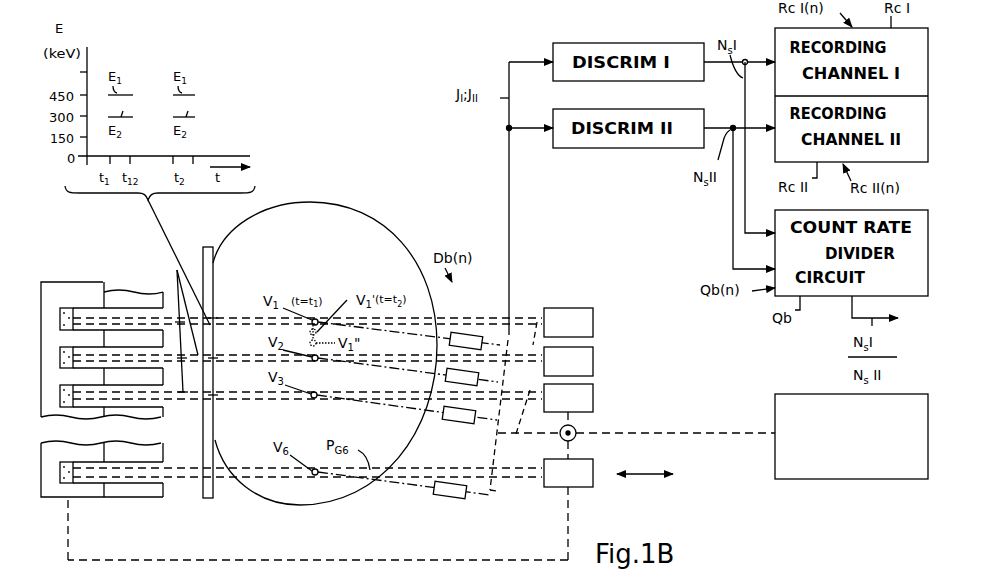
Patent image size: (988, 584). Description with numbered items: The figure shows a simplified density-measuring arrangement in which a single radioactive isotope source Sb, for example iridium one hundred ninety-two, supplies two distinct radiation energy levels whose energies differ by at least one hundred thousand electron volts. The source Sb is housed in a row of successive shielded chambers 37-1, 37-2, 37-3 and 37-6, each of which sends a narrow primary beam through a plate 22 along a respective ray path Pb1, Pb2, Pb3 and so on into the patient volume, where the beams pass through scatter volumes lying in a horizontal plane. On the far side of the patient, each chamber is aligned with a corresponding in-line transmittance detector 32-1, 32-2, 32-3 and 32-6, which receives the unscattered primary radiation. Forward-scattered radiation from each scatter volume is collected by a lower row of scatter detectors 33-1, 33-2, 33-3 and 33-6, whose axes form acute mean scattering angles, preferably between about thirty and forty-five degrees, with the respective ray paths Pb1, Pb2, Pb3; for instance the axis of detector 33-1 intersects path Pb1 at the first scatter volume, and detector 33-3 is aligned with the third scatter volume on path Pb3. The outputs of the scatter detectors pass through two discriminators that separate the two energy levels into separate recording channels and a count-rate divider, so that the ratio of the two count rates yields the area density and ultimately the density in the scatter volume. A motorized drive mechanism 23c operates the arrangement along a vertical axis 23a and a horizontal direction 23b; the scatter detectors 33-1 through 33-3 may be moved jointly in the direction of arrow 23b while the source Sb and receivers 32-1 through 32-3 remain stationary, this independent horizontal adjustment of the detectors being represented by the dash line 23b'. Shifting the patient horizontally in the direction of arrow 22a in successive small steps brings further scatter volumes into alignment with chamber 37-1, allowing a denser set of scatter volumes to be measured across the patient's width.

The shielded chamber 37-1 is at (68, 308).
The shielded chamber 37-2 is at (75, 367).
The shielded chamber 37-3 is at (85, 410).
The shielded chamber 37-6 is at (90, 485).
The radiation source Sb is at (92, 281).
The plate 22 is at (205, 492).
The arrow indicating horizontal shifting direction 22a is at (227, 490).
The scatter detector 33-1 is at (467, 335).
The scatter detector 33-2 is at (478, 382).
The scatter detector 33-3 is at (447, 421).
The scatter detector 33-6 is at (452, 495).
The transmittance detector 32-1 is at (593, 323).
The transmittance detector 32-2 is at (593, 362).
The transmittance detector 32-3 is at (593, 398).
The transmittance detector 32-6 is at (580, 483).
The vertical scanning axis 23a is at (578, 437).
The horizontal scanning direction arrow 23b is at (649, 491).
The dash line for independent horizontal detector adjustment 23b' is at (518, 451).
The motorized drive mechanism 23c is at (853, 479).
The ray path Pb1 is at (536, 320).
The ray path Pb2 is at (517, 357).
The ray path Pb3 is at (523, 413).